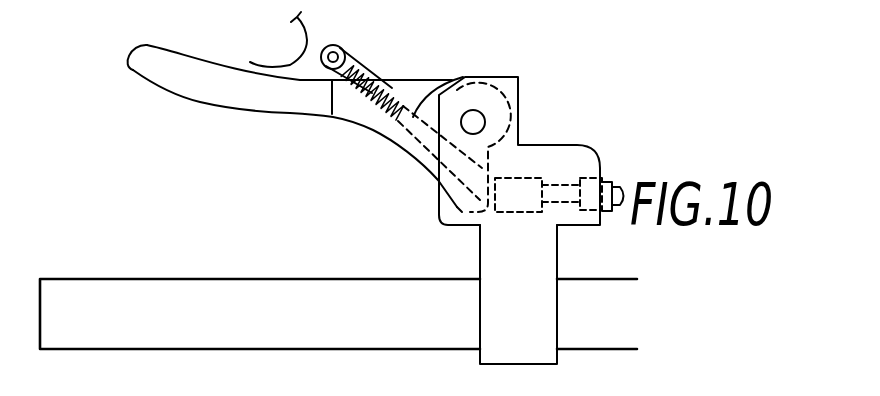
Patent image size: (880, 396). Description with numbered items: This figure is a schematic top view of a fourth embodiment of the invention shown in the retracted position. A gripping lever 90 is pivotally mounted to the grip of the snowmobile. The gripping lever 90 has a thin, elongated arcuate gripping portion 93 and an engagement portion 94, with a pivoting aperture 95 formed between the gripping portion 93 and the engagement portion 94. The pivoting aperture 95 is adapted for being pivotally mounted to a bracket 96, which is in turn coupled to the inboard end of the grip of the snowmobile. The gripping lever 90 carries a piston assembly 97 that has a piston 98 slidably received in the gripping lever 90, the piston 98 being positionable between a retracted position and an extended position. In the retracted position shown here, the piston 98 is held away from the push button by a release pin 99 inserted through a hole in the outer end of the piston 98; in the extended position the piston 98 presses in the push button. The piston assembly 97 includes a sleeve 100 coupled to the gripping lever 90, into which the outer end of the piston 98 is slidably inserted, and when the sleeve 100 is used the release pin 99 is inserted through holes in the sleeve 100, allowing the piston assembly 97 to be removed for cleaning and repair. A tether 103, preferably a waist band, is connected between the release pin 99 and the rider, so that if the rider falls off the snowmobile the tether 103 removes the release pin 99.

The gripping lever 90 is at (147, 47).
The gripping portion 93 is at (217, 100).
The engagement portion 94 is at (470, 210).
The pivoting aperture 95 is at (483, 119).
The bracket 96 is at (552, 258).
The piston assembly 97 is at (410, 69).
The piston 98 is at (462, 78).
The release pin 99 is at (342, 54).
The sleeve 100 is at (332, 114).
The tether 103 is at (260, 39).